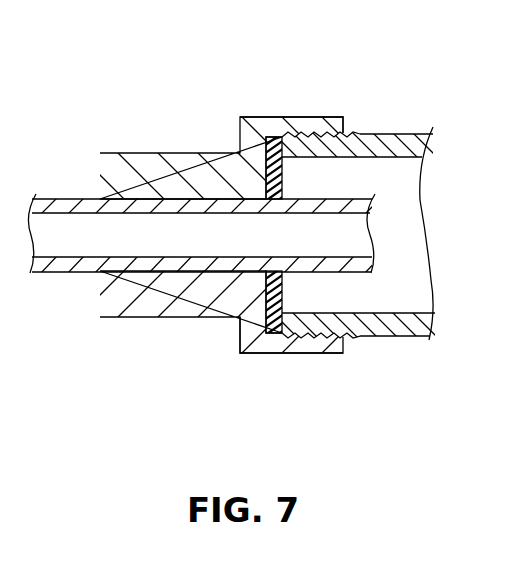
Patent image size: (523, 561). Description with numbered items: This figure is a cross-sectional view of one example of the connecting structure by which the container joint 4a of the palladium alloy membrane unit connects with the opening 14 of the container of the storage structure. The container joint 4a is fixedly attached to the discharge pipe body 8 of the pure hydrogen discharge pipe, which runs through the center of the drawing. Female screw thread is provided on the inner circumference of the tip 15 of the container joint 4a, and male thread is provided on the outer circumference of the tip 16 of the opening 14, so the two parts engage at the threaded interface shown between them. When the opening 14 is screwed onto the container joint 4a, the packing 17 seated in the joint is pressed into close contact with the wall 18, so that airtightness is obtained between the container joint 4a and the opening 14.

The discharge pipe body 8 is at (70, 199).
The container joint 4a is at (175, 153).
The tip of the container joint 15 is at (307, 125).
The tip of the opening 16 is at (345, 125).
The packing 17 is at (283, 288).
The wall 18 is at (262, 302).
The opening 14 is at (412, 330).